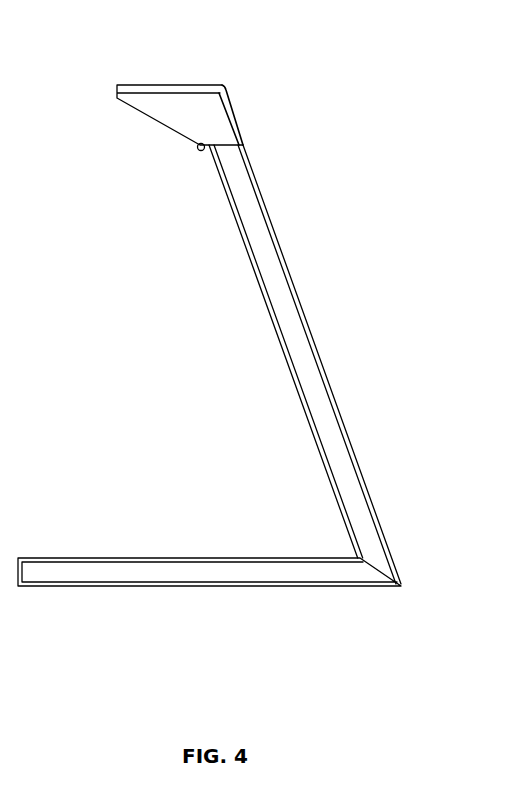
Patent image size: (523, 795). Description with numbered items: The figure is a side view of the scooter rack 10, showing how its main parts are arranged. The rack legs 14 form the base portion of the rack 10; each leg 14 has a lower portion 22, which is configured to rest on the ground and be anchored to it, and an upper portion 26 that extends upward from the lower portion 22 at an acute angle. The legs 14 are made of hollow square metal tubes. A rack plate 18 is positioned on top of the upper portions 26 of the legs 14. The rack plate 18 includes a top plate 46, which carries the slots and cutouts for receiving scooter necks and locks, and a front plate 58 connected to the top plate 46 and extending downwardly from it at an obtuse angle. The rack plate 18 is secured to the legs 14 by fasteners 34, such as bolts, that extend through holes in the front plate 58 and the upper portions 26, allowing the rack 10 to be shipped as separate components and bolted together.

The scooter rack 10 is at (310, 193).
The rack legs 14 is at (338, 352).
The rack plate 18 is at (213, 62).
The lower portion 22 is at (288, 572).
The upper portion 26 is at (353, 458).
The fasteners 34 is at (197, 153).
The top plate 46 is at (150, 85).
The front plate 58 is at (235, 113).